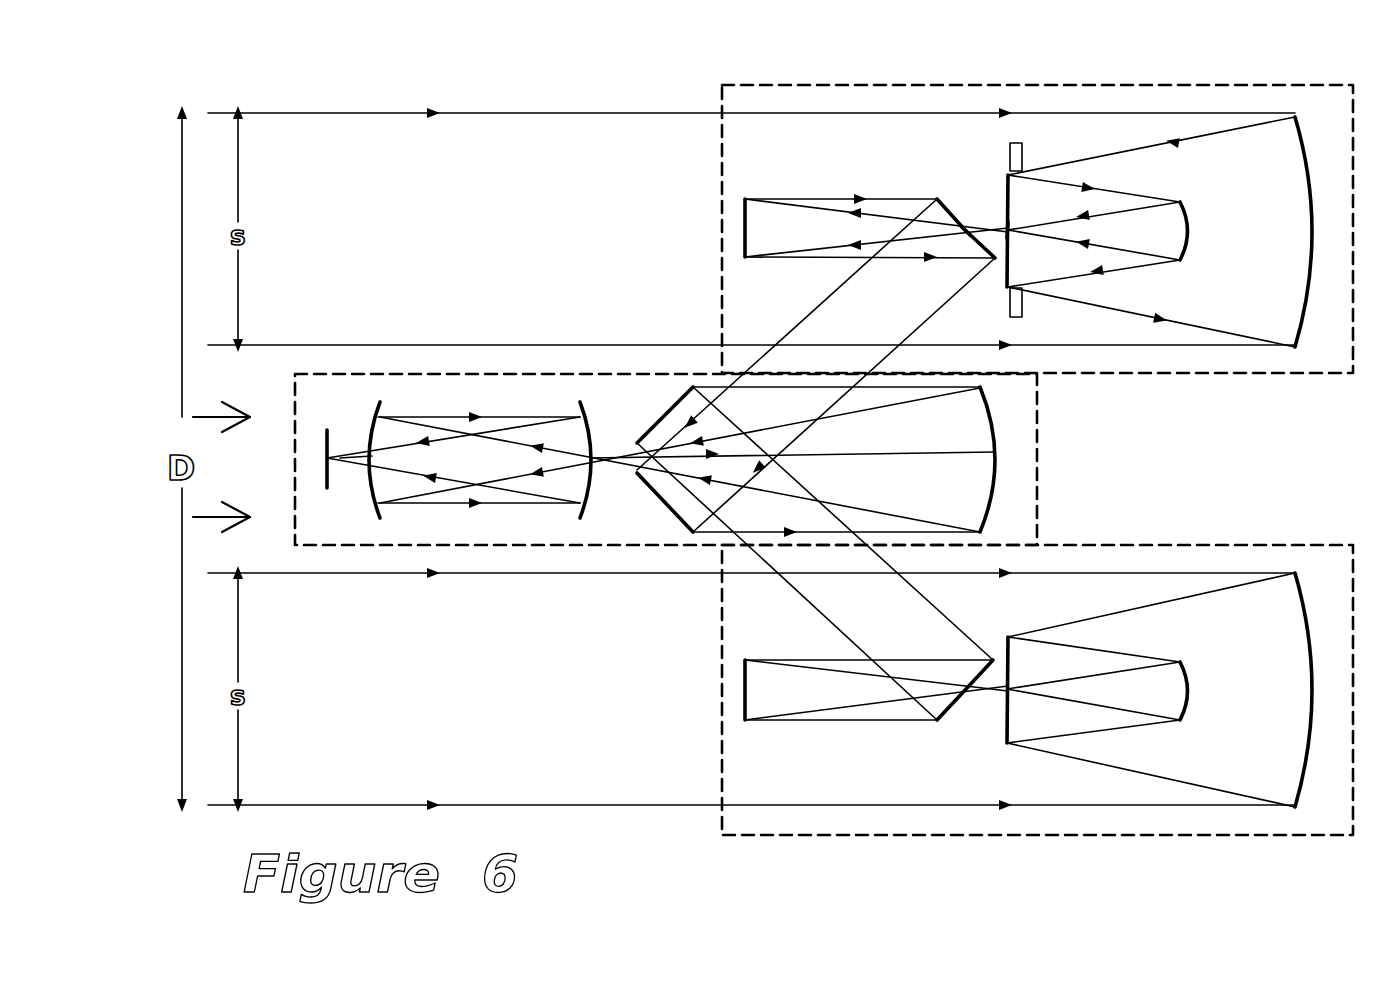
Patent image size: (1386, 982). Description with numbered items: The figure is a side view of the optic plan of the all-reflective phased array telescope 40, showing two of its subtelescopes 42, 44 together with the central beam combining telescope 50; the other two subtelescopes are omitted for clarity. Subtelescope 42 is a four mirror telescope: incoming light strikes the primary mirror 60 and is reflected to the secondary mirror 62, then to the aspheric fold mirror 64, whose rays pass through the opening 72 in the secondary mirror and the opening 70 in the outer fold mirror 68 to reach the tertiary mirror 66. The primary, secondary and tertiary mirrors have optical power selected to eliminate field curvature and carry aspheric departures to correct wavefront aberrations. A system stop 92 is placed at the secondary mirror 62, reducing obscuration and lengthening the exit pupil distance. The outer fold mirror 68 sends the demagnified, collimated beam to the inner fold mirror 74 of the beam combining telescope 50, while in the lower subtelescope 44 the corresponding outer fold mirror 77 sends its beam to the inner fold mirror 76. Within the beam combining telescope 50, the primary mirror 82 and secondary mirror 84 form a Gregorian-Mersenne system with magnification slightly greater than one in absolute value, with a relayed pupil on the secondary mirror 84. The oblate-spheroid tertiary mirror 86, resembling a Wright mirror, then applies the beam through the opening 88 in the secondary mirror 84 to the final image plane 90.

The phased array telescope 40 is at (623, 107).
The subtelescope 42 is at (1266, 380).
The subtelescope 44 is at (1266, 544).
The beam combining telescope 50 is at (1038, 486).
The primary mirror 60 is at (1302, 184).
The secondary mirror 62 is at (1006, 282).
The aspheric fold mirror 64 is at (1188, 231).
The tertiary mirror 66 is at (748, 197).
The outer fold mirror 68 is at (937, 198).
The opening 70 is at (966, 230).
The opening 72 is at (1011, 228).
The inner fold mirror 74 is at (662, 496).
The inner fold mirror 76 is at (662, 420).
The outer fold mirror 77 is at (953, 702).
The primary mirror 82 is at (993, 440).
The secondary mirror 84 is at (375, 419).
The tertiary mirror 86 is at (612, 448).
The opening 88 is at (372, 456).
The final image plane 90 is at (325, 440).
The system stop 92 is at (1023, 160).